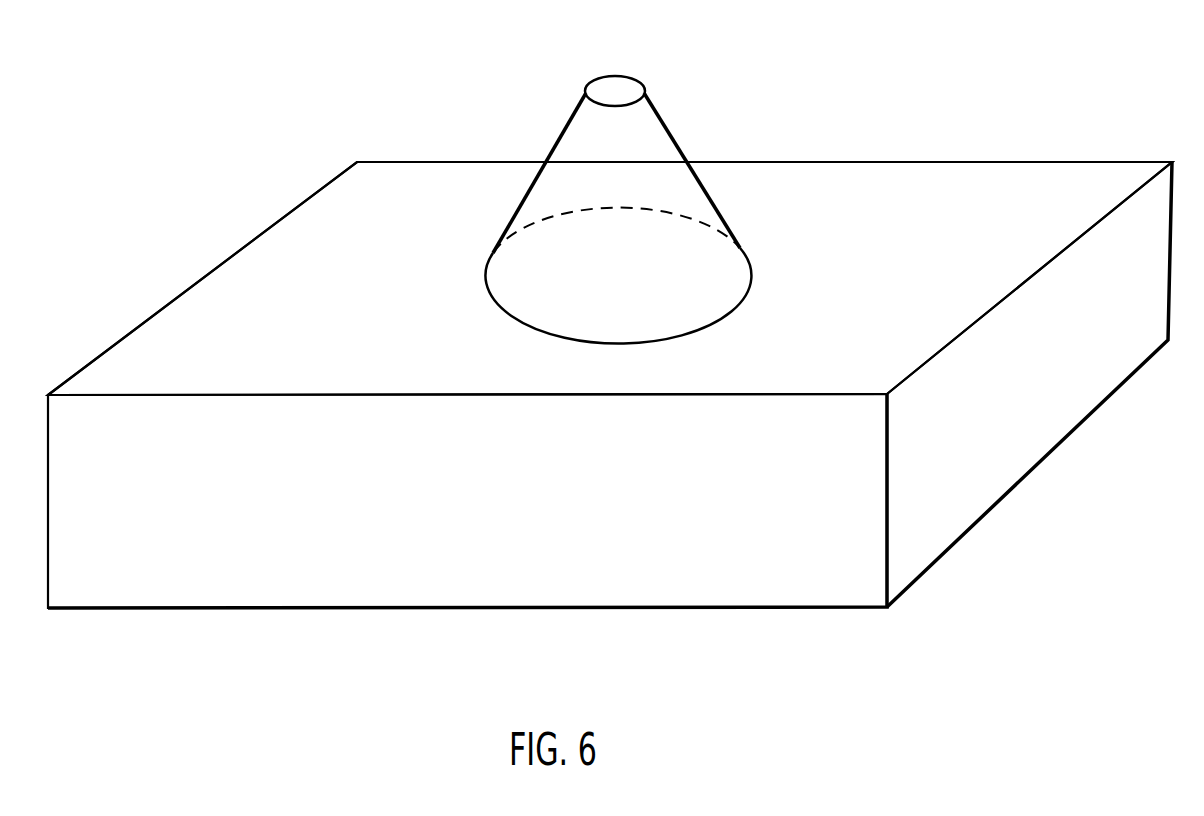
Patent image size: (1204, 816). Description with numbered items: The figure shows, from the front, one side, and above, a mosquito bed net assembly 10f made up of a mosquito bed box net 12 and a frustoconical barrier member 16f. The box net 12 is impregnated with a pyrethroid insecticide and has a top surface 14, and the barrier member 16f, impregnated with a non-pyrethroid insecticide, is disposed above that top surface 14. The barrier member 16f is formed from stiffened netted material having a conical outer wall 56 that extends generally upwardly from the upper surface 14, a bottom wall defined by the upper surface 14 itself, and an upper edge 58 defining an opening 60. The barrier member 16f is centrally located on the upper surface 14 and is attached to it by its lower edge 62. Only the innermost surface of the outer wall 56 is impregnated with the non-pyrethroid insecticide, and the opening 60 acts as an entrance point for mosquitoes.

The mosquito bed net assembly 10f is at (610, 339).
The mosquito bed box net 12 is at (555, 573).
The top surface 14 is at (215, 303).
The frustoconical barrier member 16f is at (627, 192).
The conical outer wall 56 is at (673, 130).
The upper edge 58 is at (633, 78).
The opening 60 is at (635, 59).
The lower edge 62 is at (710, 323).